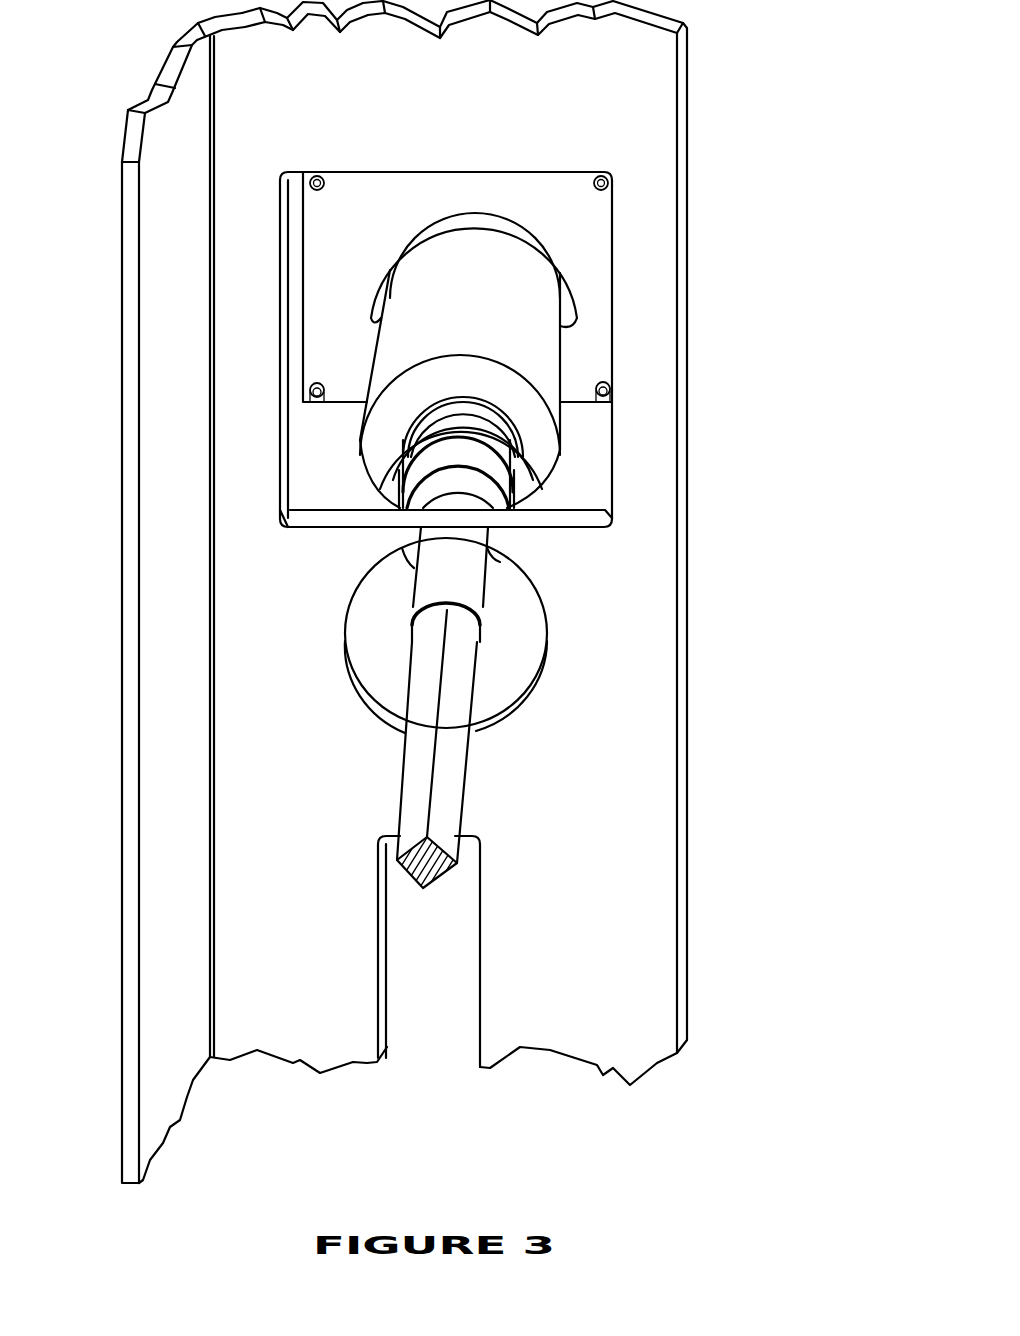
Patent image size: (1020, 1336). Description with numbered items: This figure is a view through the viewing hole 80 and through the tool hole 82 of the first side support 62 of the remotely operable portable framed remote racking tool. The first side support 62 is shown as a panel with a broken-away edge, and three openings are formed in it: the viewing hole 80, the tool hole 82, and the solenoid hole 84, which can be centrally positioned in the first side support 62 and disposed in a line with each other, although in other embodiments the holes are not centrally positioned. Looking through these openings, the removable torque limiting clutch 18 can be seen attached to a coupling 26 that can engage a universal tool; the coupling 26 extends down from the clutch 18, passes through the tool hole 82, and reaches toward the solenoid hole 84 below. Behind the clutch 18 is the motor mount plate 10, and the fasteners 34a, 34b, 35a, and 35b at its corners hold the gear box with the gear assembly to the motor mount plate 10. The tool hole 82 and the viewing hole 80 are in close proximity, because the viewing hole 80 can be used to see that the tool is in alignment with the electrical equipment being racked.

The motor mount plate 10 is at (601, 222).
The removable torque limiting clutch 18 is at (387, 350).
The coupling 26 is at (452, 783).
The fastener 34a is at (327, 193).
The fastener 34b is at (593, 193).
The fastener 35a is at (313, 403).
The fastener 35b is at (608, 403).
The first side support 62 is at (643, 840).
The viewing hole 80 is at (611, 494).
The tool hole 82 is at (523, 683).
The solenoid hole 84 is at (480, 940).